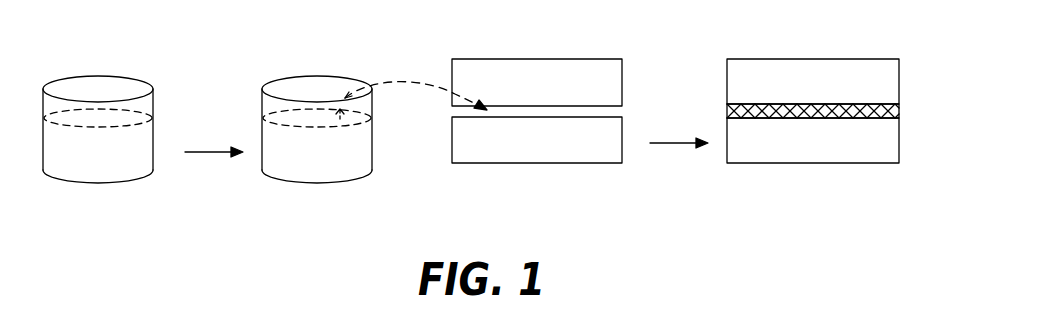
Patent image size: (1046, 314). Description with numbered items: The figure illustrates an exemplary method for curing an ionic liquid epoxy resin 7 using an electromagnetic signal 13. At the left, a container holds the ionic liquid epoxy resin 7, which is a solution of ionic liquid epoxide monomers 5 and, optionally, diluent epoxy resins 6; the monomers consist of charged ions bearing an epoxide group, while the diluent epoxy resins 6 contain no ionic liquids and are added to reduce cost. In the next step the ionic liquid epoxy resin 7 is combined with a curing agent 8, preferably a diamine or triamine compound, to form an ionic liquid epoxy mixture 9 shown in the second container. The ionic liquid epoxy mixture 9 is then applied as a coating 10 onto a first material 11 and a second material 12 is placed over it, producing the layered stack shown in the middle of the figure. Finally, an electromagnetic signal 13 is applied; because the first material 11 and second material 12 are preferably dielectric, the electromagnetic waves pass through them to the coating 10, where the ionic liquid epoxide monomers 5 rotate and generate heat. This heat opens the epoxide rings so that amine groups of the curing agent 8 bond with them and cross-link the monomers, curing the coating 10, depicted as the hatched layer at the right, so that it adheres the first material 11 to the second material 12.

The ionic liquid epoxide monomers 5 is at (128, 148).
The diluent epoxy resins 6 is at (317, 118).
The ionic liquid epoxy resin 7 is at (113, 59).
The curing agent 8 is at (217, 156).
The ionic liquid epoxy mixture 9 is at (333, 62).
The coating 10 is at (603, 112).
The first material 11 is at (588, 150).
The second material 12 is at (569, 77).
The electromagnetic signal 13 is at (680, 146).